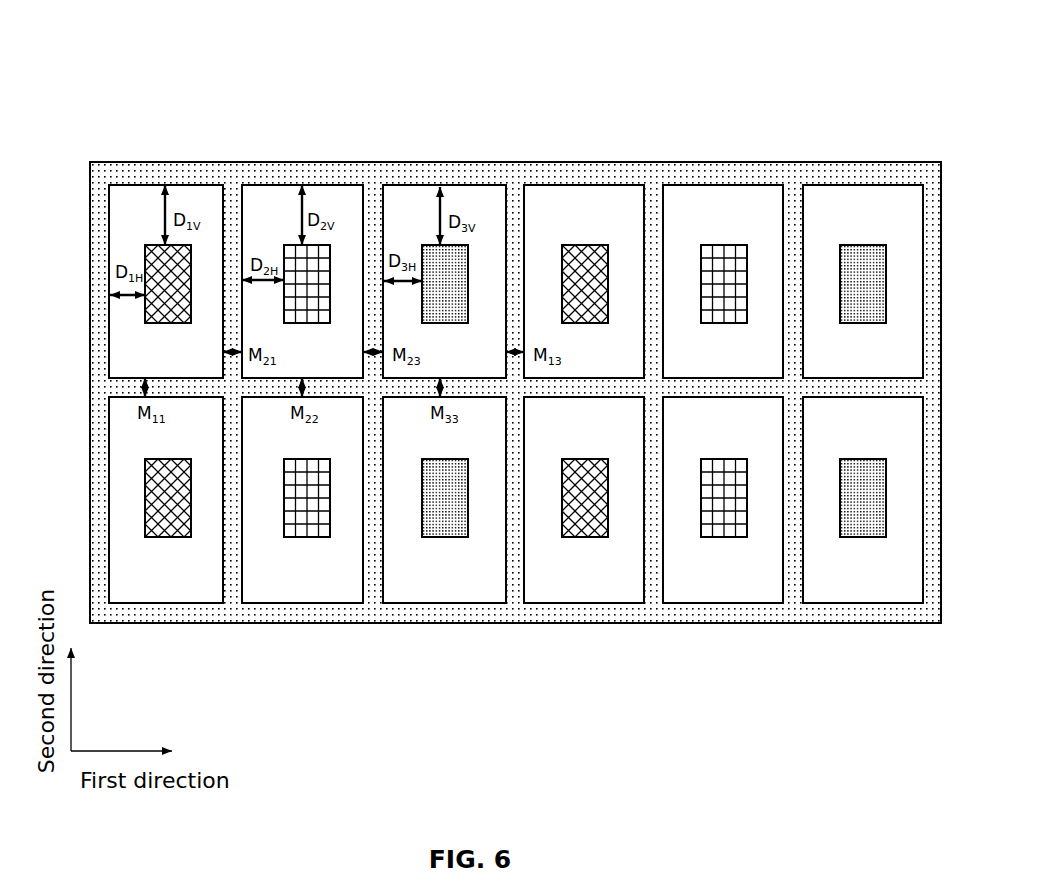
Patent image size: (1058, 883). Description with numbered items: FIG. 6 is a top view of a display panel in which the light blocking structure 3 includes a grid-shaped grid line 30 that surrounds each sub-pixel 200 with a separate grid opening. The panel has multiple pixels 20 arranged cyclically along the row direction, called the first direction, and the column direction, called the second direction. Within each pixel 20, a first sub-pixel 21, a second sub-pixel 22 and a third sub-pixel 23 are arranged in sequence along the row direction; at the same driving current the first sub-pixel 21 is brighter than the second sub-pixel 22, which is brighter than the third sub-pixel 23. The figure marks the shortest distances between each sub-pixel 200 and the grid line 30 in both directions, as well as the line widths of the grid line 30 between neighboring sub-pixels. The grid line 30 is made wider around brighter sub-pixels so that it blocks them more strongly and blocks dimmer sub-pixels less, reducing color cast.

The light blocking structure 3 is at (538, 164).
The grid line 30 is at (473, 164).
The pixel 20 is at (724, 179).
The first sub-pixel 21 is at (587, 253).
The second sub-pixel 22 is at (715, 255).
The third sub-pixel 23 is at (857, 206).
The sub-pixel 200 is at (875, 258).